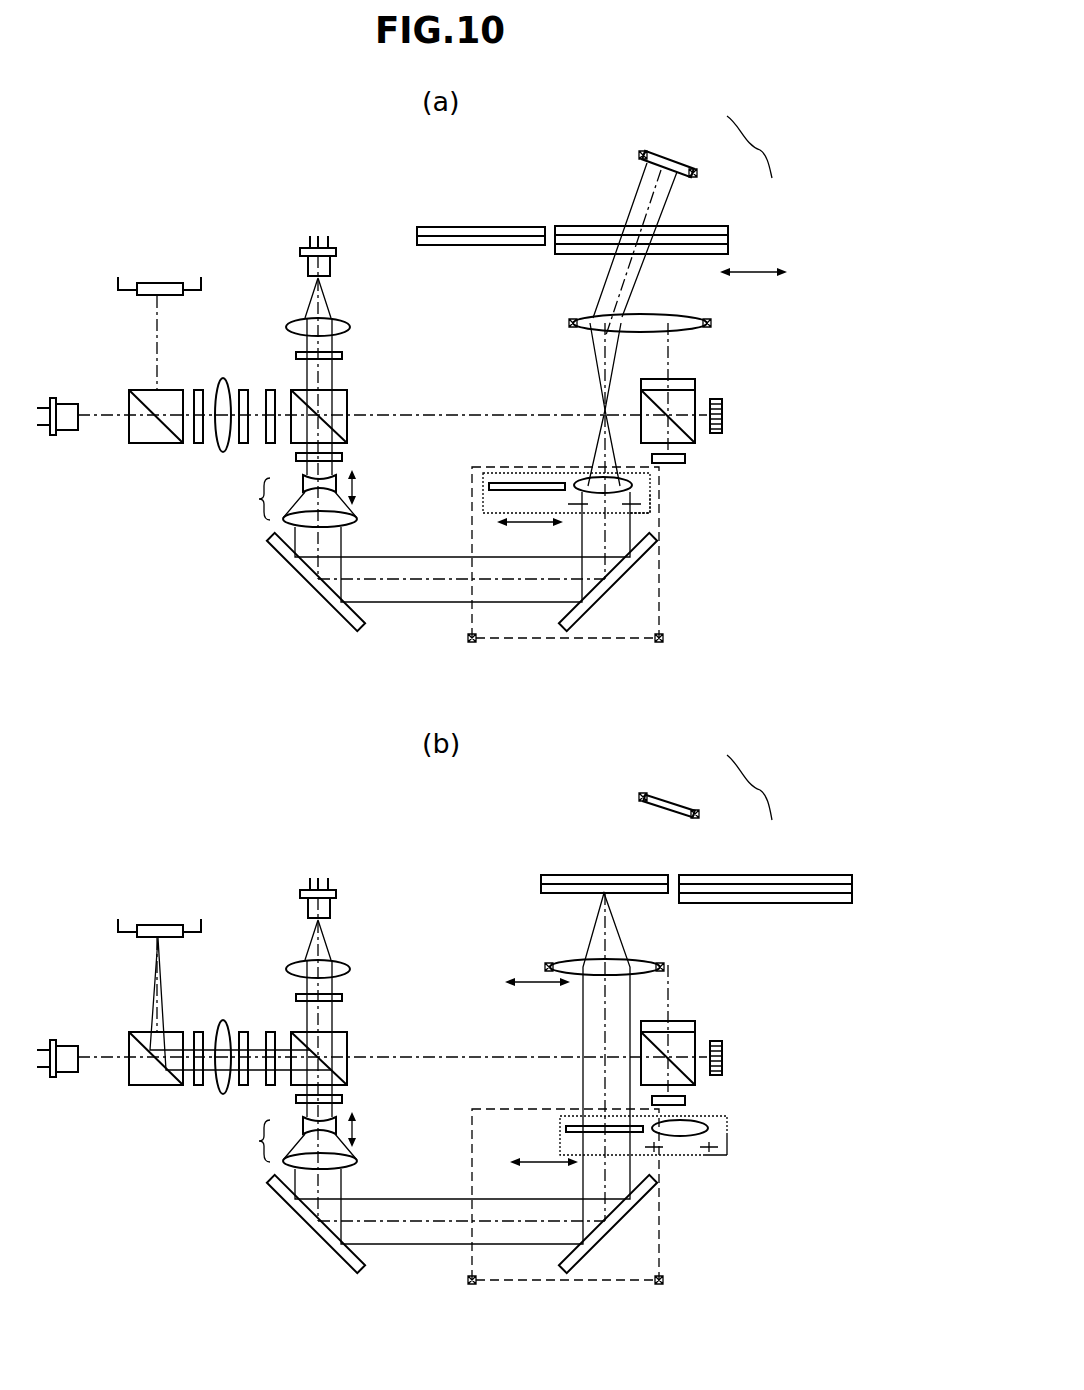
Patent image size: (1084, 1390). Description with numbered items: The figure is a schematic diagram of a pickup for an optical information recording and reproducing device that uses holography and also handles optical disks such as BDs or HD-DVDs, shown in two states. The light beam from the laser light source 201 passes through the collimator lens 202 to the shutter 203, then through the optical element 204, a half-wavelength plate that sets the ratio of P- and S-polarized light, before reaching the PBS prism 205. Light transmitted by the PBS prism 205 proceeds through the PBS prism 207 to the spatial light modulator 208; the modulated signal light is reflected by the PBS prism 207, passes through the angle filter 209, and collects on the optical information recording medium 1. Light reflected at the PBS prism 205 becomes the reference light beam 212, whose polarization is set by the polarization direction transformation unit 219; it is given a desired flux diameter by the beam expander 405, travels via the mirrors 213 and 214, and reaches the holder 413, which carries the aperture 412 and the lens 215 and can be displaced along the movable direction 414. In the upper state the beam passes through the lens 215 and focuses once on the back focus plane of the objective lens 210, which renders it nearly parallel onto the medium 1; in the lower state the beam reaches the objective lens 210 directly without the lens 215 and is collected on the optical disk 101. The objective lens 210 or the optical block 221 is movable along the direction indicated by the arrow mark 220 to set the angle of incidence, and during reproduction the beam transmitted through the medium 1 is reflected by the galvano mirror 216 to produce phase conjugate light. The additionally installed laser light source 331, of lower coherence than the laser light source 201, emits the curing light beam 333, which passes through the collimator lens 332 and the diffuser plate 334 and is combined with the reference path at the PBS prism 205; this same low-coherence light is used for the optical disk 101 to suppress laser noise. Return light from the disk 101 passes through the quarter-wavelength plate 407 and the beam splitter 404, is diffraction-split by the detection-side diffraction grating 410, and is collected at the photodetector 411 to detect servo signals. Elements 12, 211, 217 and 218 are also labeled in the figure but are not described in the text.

The optical information recording medium 1 is at (730, 234).
The mirror unit 12 is at (757, 468).
The optical disk 101 is at (432, 227).
The laser light source 201 is at (68, 402).
The collimator lens 202 is at (217, 390).
The shutter 203 is at (242, 388).
The optical element 204 is at (272, 388).
The PBS prism 205 is at (296, 448).
The PBS prism 207 is at (692, 398).
The spatial light modulator 208 is at (725, 416).
The angle filter 209 is at (693, 380).
The objective lens 210 is at (662, 318).
The lens actuator 211 is at (711, 325).
The reference light beam 212 is at (365, 558).
The mirror 213 is at (305, 574).
The mirror 214 is at (638, 582).
The lens 215 is at (632, 490).
The galvano mirror 216 is at (683, 160).
The mirror actuator 217 is at (698, 176).
The photodetector 218 is at (688, 458).
The polarization direction transformation unit 219 is at (344, 458).
The movable direction 220 is at (780, 278).
The optical block 221 is at (556, 640).
The laser light source 331 is at (303, 248).
The collimator lens 332 is at (300, 322).
The curing light beam 333 is at (328, 310).
The diffuser plate 334 is at (342, 360).
The beam splitter 404 is at (145, 447).
The beam expander 405 is at (291, 822).
The quarter wavelength plate 407 is at (505, 474).
The detection-side diffraction grating 410 is at (197, 446).
The photodetector 411 is at (152, 282).
The aperture 412 is at (650, 513).
The holder 413 is at (489, 487).
The movable direction 414 is at (532, 525).